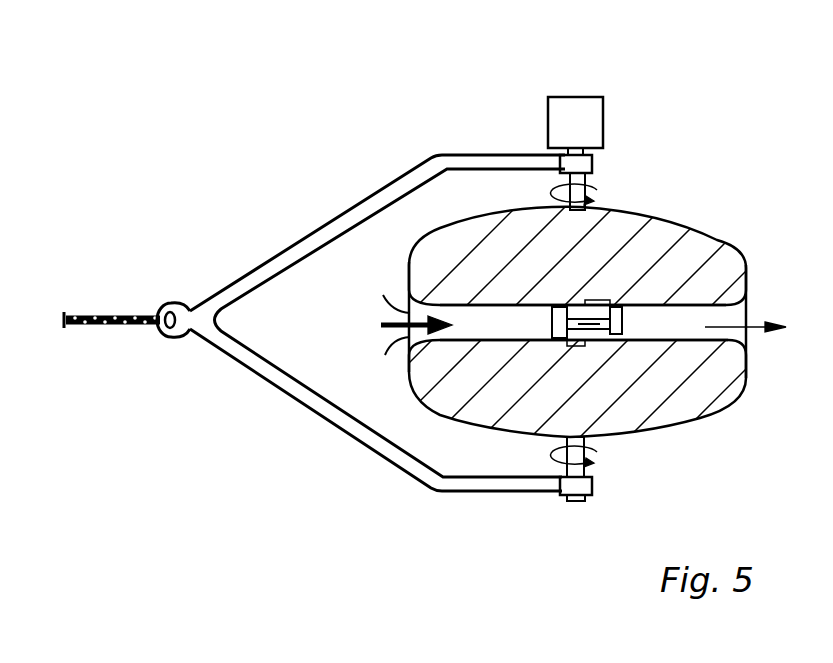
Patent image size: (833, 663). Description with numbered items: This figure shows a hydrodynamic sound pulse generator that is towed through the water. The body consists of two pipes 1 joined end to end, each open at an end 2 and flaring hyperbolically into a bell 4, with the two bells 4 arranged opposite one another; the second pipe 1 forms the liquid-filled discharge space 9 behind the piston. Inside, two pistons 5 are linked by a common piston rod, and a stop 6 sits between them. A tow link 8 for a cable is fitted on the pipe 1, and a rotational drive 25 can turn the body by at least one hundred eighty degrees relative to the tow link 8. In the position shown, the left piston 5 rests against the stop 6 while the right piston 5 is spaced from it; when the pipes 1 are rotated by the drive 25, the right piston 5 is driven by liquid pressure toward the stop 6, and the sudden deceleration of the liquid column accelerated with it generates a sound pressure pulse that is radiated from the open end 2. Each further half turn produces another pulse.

The pipe 1 is at (490, 342).
The open end of the pipe 2 is at (408, 292).
The bell 4 is at (428, 348).
The piston 5 is at (548, 340).
The stop 6 is at (575, 342).
The tow link 8 is at (192, 325).
The discharge space 9 is at (692, 333).
The rotational drive 25 is at (576, 112).